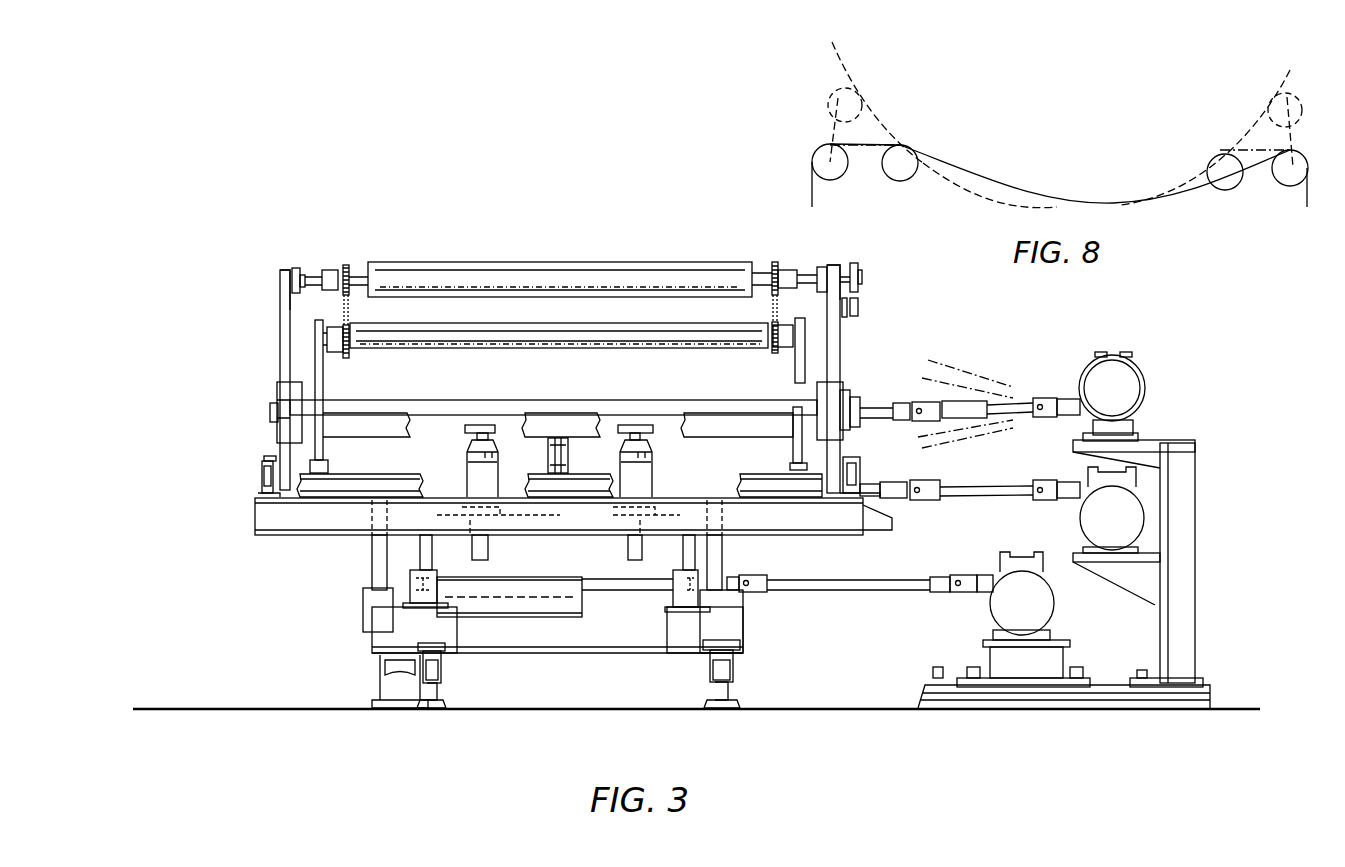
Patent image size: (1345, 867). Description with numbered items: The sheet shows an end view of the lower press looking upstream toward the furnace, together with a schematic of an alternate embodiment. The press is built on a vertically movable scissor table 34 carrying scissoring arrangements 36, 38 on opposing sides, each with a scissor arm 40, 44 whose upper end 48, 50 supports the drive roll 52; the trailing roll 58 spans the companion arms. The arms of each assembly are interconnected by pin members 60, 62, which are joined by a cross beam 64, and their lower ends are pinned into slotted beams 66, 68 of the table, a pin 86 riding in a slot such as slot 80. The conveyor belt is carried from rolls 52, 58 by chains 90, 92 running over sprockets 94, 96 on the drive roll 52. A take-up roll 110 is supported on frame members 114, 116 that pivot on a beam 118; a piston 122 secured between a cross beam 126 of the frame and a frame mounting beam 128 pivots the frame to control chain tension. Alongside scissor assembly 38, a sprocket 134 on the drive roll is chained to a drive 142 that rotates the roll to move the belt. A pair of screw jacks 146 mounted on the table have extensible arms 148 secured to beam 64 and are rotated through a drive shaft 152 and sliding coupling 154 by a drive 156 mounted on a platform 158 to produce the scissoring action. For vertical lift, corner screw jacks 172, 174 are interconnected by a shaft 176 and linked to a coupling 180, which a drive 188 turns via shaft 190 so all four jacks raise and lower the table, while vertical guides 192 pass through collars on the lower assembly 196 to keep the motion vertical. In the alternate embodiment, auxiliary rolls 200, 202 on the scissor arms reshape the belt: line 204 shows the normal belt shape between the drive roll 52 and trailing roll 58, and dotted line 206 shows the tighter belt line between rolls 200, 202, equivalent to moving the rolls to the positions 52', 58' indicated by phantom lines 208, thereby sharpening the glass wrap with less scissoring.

In FIG. 3, the scissor table 34 is at (283, 537).
In FIG. 3, the scissoring arrangement 36 is at (280, 353).
In FIG. 3, the scissoring arrangement 38 is at (843, 348).
In FIG. 3, the scissor arm 40 is at (280, 307).
In FIG. 3, the scissor arm 44 is at (843, 333).
In FIG. 3, the upper end 48 is at (280, 272).
In FIG. 3, the upper end 50 is at (835, 268).
In FIG. 3, the drive roll 52 is at (560, 252).
In FIG. 8, the drive roll 52 is at (1282, 187).
In FIG. 8, the trailing roll 58 is at (841, 175).
In FIG. 3, the pin member 60 is at (275, 408).
In FIG. 3, the pin member 62 is at (843, 397).
In FIG. 3, the cross beam 64 is at (467, 400).
In FIG. 3, the slotted beam 66 is at (268, 460).
In FIG. 3, the slotted beam 68 is at (848, 453).
In FIG. 3, the slot 80 is at (858, 477).
In FIG. 3, the pin 86 is at (262, 475).
In FIG. 3, the chain 90 is at (343, 300).
In FIG. 3, the chain 92 is at (778, 297).
In FIG. 3, the sprocket 94 is at (344, 265).
In FIG. 3, the sprocket 96 is at (777, 262).
In FIG. 3, the take-up roll 110 is at (490, 347).
In FIG. 3, the frame member 114 is at (323, 363).
In FIG. 3, the frame member 116 is at (802, 380).
In FIG. 3, the beam 118 is at (363, 475).
In FIG. 3, the piston 122 is at (568, 447).
In FIG. 3, the cross beam 126 is at (565, 410).
In FIG. 3, the frame mounting beam 128 is at (540, 472).
In FIG. 3, the sprocket 134 is at (853, 267).
In FIG. 3, the drive 142 is at (1142, 380).
In FIG. 3, the screw jack 146 is at (468, 485).
In FIG. 3, the extensible arm 148 is at (473, 433).
In FIG. 3, the drive shaft 152 is at (868, 487).
In FIG. 3, the sliding coupling 154 is at (962, 402).
In FIG. 3, the drive 156 is at (1143, 513).
In FIG. 3, the platform 158 is at (1195, 547).
In FIG. 3, the screw jack 172 is at (428, 572).
In FIG. 3, the screw jack 174 is at (673, 570).
In FIG. 3, the shaft 176 is at (492, 577).
In FIG. 3, the coupling 180 is at (745, 575).
In FIG. 3, the drive 188 is at (1055, 598).
In FIG. 3, the shaft 190 is at (882, 580).
In FIG. 3, the vertical guide 192 is at (372, 565).
In FIG. 3, the lower assembly 196 is at (753, 646).
In FIG. 8, the auxiliary roll 200 is at (1220, 184).
In FIG. 8, the auxiliary roll 202 is at (903, 180).
In FIG. 8, the line 204 is at (1030, 195).
In FIG. 8, the dotted line 206 is at (1057, 207).
In FIG. 8, the phantom lines 208 is at (838, 48).
In FIG. 8, the trailing roll position 58' is at (824, 116).
In FIG. 8, the drive roll position 52' is at (1300, 117).